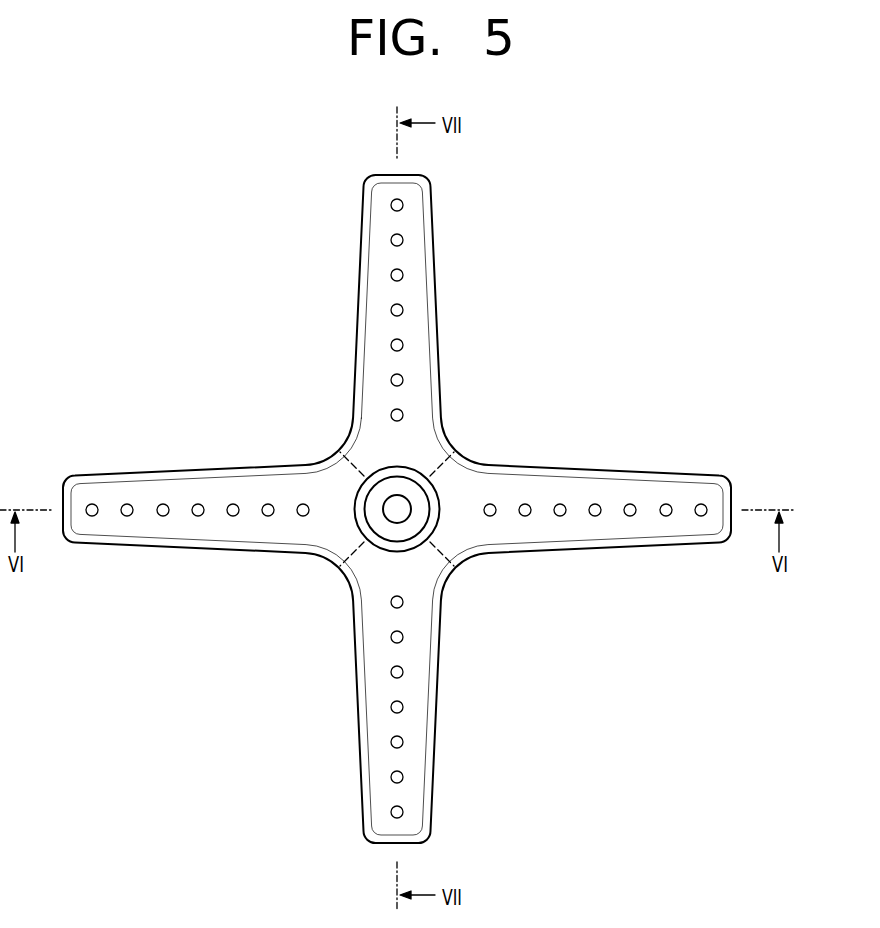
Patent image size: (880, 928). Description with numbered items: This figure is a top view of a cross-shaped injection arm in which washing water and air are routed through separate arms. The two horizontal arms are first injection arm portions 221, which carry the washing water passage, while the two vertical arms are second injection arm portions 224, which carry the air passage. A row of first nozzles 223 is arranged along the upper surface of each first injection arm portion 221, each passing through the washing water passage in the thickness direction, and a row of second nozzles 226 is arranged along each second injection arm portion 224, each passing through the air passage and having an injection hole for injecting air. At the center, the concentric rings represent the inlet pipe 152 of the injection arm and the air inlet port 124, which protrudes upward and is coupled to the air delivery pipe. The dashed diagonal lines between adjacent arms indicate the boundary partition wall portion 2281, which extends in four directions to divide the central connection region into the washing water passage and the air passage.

The first injection arm portion 221 is at (190, 548).
The second injection arm portion 224 is at (436, 298).
The first nozzle 223 is at (163, 504).
The second nozzle 226 is at (400, 240).
The inlet pipe 152 is at (428, 524).
The air inlet port 124 is at (384, 511).
The boundary partition wall portion 2281 is at (362, 468).